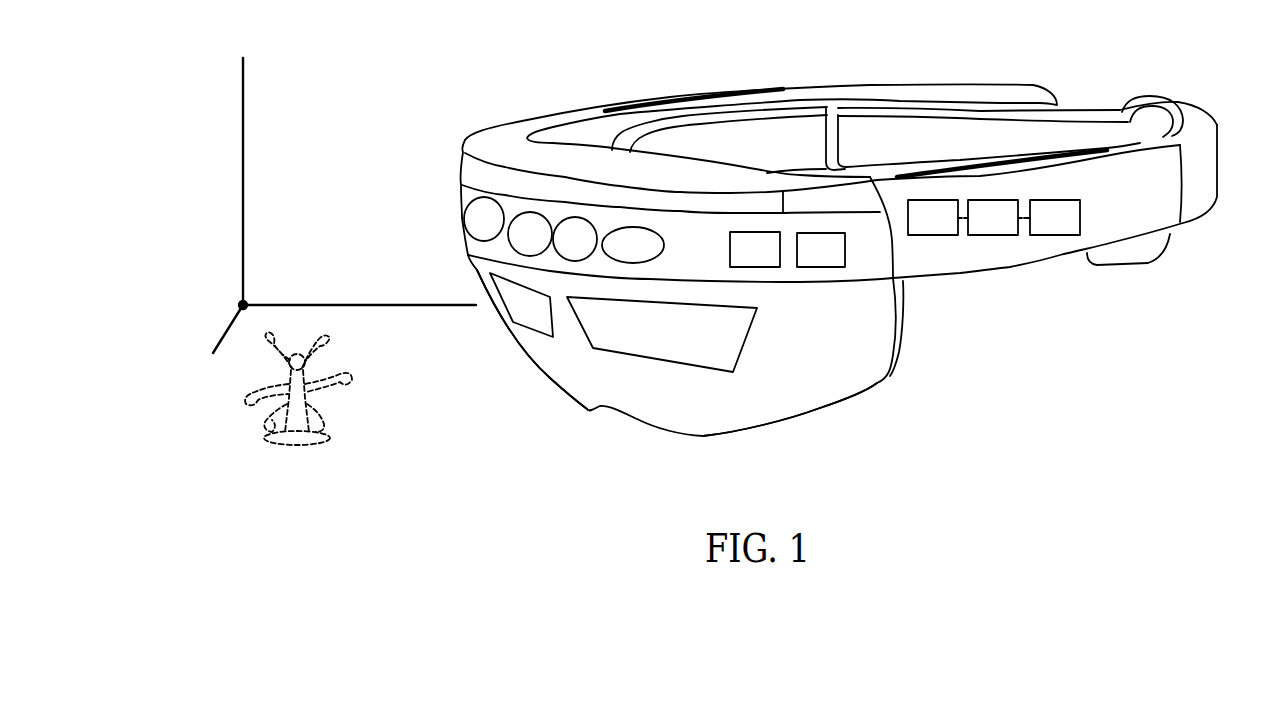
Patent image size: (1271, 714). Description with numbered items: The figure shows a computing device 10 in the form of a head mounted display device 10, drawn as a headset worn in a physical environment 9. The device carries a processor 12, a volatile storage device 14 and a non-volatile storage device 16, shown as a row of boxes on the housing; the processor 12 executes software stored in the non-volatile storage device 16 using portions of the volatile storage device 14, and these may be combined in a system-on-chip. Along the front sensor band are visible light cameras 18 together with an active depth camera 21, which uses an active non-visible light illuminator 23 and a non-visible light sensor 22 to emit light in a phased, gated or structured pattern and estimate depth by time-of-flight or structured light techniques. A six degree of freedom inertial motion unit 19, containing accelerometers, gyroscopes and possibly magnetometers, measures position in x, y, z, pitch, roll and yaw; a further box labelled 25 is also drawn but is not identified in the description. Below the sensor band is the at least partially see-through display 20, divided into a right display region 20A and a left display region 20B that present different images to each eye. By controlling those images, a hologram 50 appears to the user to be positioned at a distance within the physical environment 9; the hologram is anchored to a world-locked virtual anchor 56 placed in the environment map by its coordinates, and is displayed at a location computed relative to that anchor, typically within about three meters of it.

The physical environment 9 is at (311, 193).
The head mounted display device 10 is at (839, 231).
The processor 12 is at (933, 217).
The volatile storage device 14 is at (993, 217).
The non-volatile storage device 16 is at (1055, 217).
The visible light cameras 18 is at (499, 230).
The six degree of freedom inertial motion unit 19 is at (821, 250).
The display 20 is at (822, 400).
The right display region 20A is at (662, 334).
The left display region 20B is at (521, 305).
The active depth camera 21 is at (564, 210).
The non-visible light sensor 22 is at (545, 245).
The active non-visible light illuminator 23 is at (590, 250).
The inertial measurement unit 25 is at (755, 249).
The hologram 50 is at (332, 355).
The virtual anchor 56 is at (247, 301).